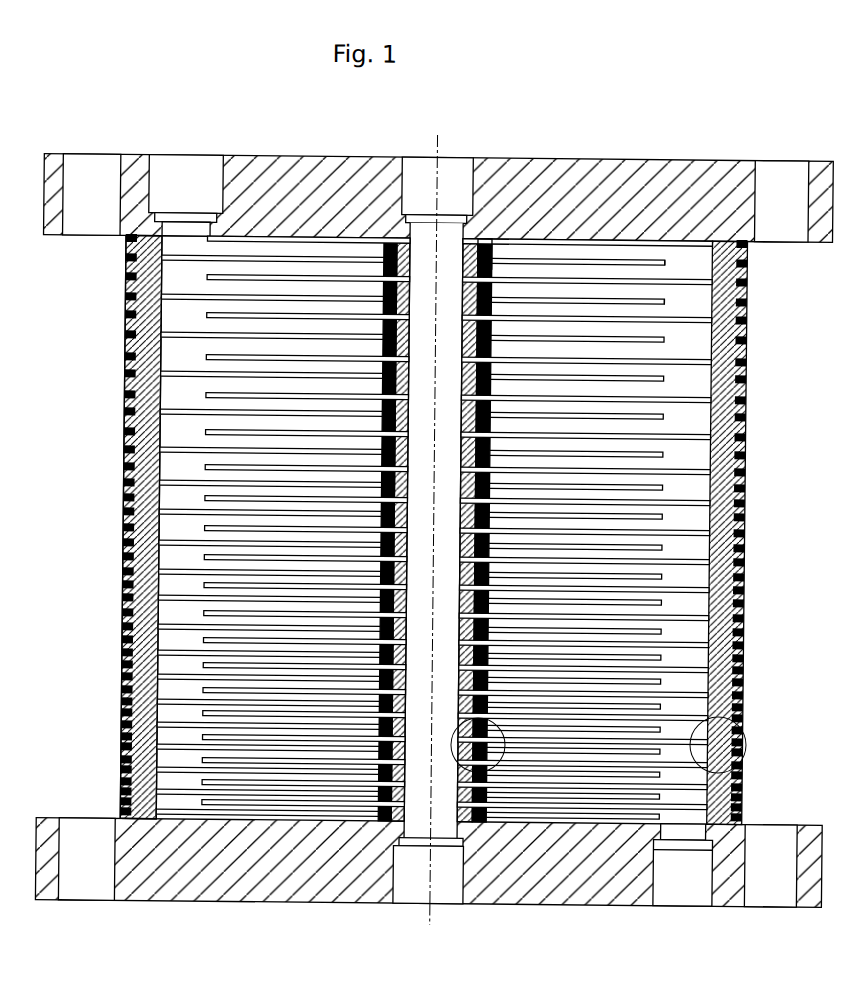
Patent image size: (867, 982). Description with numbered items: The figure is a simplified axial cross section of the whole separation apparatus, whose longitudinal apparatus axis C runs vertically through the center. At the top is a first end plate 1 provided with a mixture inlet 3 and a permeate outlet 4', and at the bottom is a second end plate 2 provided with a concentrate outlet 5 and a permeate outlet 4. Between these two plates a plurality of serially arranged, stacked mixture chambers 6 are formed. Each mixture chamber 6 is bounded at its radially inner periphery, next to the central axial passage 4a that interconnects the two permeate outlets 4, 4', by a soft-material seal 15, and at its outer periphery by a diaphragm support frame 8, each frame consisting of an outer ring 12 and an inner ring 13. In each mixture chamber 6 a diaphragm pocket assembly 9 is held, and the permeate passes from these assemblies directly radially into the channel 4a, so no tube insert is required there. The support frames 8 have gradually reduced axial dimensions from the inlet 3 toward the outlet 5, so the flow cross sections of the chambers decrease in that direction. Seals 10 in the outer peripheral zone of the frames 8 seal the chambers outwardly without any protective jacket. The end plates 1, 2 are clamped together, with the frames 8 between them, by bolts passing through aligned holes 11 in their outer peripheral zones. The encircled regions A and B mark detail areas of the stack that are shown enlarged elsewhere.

The first end plate 1 is at (597, 168).
The second end plate 2 is at (530, 890).
The mixture inlet 3 is at (179, 170).
The permeate outlet 4 is at (437, 589).
The axial passage 4a is at (444, 538).
The permeate outlet 4' is at (438, 162).
The concentrate outlet 5 is at (672, 888).
The mixture chamber 6 is at (681, 273).
The diaphragm support frame 8 is at (119, 305).
The diaphragm pocket assembly 9 is at (658, 298).
The seal 10 is at (129, 515).
The hole 11 is at (92, 171).
The outer ring 12 is at (749, 498).
The inner ring 13 is at (410, 253).
The soft-material seal 15 is at (497, 266).
The detail region A is at (751, 740).
The detail region B is at (458, 732).
The longitudinal apparatus axis C is at (436, 912).